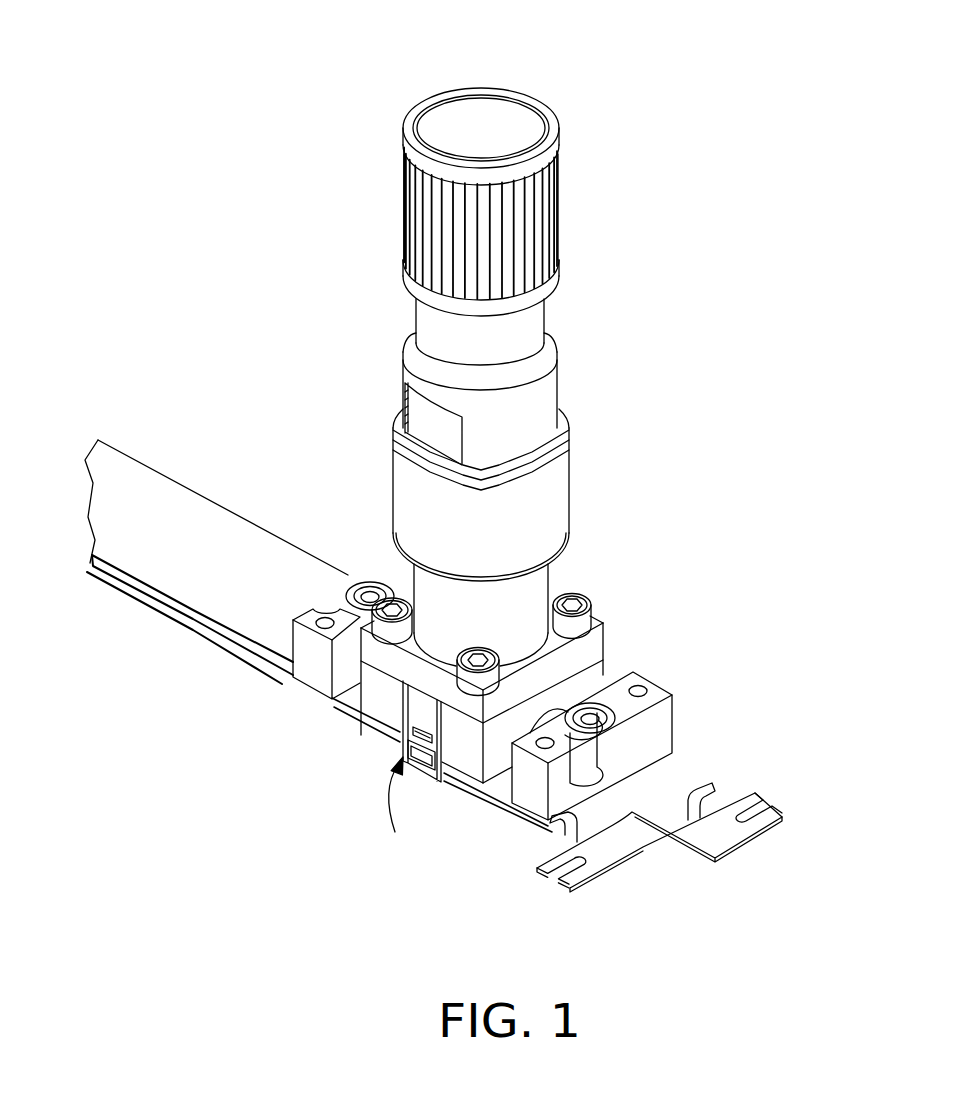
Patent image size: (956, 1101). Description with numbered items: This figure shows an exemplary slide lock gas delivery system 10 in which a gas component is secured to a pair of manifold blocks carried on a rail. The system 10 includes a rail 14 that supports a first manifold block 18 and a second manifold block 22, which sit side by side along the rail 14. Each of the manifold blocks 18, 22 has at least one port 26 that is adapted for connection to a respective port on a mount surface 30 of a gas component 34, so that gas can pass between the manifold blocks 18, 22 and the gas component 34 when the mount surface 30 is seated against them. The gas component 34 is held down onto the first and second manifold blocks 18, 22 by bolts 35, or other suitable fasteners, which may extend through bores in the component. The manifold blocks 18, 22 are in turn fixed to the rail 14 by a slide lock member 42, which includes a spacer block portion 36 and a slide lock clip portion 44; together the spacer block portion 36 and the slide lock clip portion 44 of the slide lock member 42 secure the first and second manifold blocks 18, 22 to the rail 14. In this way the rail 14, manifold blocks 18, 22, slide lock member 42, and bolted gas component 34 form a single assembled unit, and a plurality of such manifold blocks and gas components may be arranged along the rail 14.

The slide lock gas delivery system 10 is at (293, 120).
The rail 14 is at (155, 502).
The first manifold block 18 is at (657, 685).
The second manifold block 22 is at (310, 660).
The port 26 is at (368, 592).
The mount surface 30 is at (600, 673).
The gas component 34 is at (508, 123).
The bolts 35 is at (578, 596).
The spacer block portion 36 is at (400, 703).
The slide lock member 42 is at (392, 811).
The slide lock clip portion 44 is at (423, 715).